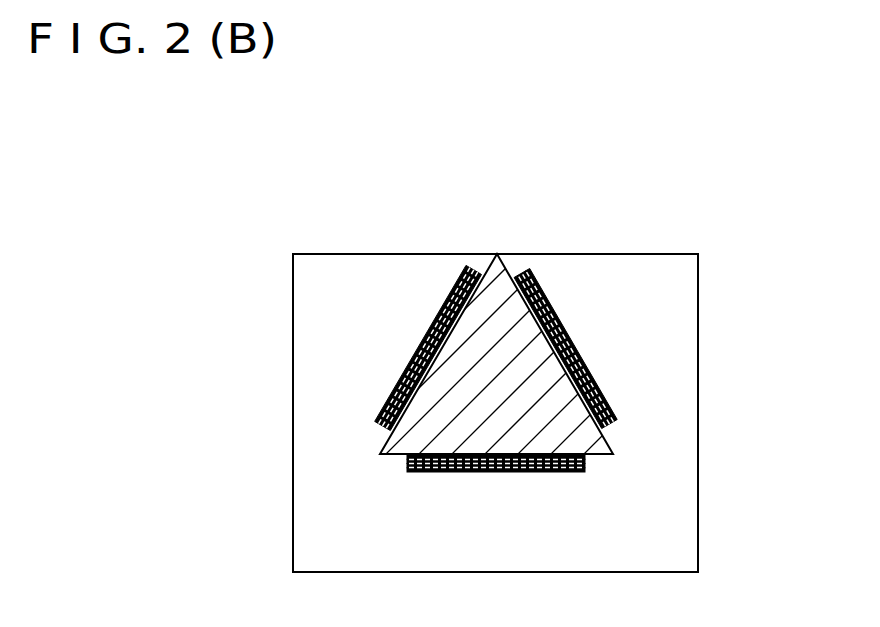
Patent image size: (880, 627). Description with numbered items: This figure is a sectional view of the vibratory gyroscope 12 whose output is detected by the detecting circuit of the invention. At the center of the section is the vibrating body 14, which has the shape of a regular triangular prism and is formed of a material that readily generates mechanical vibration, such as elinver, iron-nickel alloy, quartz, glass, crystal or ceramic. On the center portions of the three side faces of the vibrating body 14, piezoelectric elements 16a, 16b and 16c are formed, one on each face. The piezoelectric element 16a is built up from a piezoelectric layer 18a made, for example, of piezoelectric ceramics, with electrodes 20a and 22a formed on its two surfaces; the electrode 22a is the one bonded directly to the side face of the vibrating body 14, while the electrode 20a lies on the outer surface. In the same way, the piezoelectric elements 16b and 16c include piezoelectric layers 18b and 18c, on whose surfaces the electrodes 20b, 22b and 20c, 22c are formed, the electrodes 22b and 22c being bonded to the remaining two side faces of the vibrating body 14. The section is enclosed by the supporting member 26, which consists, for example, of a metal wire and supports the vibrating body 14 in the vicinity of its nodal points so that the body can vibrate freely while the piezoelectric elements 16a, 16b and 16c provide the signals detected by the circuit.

The vibratory gyroscope 12 is at (347, 169).
The vibrating body 14 is at (398, 437).
The piezoelectric element 16a is at (447, 283).
The piezoelectric element 16b is at (549, 279).
The piezoelectric element 16c is at (583, 481).
The piezoelectric layer 18a is at (408, 363).
The piezoelectric layer 18b is at (566, 361).
The piezoelectric layer 18c is at (456, 475).
The electrode 20a is at (436, 323).
The electrode 20b is at (557, 321).
The electrode 20c is at (521, 475).
The electrode 22a is at (388, 404).
The electrode 22b is at (599, 404).
The electrode 22c is at (426, 476).
The supporting member 26 is at (650, 253).